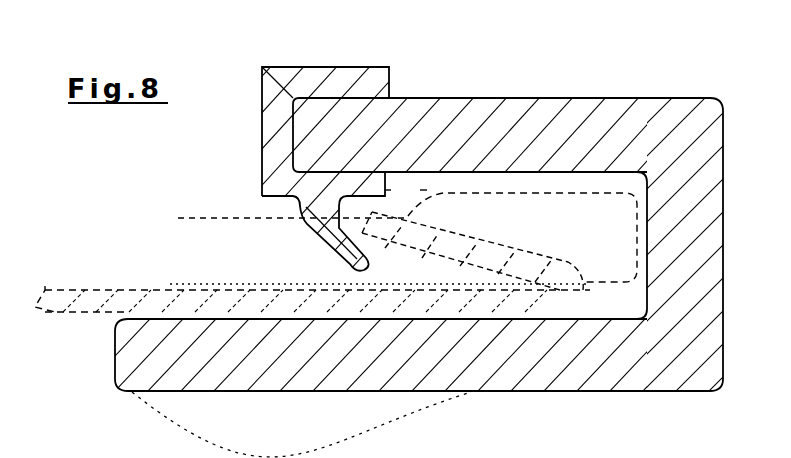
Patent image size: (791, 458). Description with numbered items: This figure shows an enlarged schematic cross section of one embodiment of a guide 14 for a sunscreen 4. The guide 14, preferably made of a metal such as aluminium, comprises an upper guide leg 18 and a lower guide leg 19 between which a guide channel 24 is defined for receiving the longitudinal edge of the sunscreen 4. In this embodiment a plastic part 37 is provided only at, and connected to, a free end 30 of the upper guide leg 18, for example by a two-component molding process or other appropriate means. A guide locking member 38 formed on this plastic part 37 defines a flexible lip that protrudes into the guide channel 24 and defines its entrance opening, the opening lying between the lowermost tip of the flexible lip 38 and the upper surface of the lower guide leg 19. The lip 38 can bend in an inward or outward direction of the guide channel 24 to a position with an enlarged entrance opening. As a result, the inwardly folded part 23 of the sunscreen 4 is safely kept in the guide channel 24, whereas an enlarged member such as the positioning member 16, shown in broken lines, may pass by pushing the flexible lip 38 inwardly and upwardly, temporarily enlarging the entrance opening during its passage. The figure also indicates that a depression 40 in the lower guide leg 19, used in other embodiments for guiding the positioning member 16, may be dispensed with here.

The sunscreen 4 is at (78, 289).
The guide 14 is at (667, 96).
The positioning member 16 is at (190, 217).
The upper guide leg 18 is at (583, 108).
The lower guide leg 19 is at (573, 386).
The inwardly folded part 23 is at (466, 258).
The guide channel 24 is at (511, 231).
The free end 30 is at (340, 125).
The plastic part 37 is at (270, 128).
The guide locking member 38 is at (352, 258).
The depression 40 is at (253, 378).